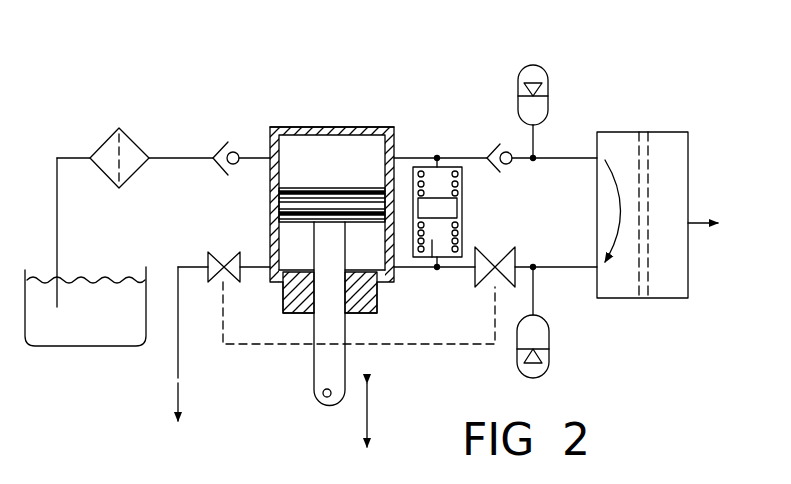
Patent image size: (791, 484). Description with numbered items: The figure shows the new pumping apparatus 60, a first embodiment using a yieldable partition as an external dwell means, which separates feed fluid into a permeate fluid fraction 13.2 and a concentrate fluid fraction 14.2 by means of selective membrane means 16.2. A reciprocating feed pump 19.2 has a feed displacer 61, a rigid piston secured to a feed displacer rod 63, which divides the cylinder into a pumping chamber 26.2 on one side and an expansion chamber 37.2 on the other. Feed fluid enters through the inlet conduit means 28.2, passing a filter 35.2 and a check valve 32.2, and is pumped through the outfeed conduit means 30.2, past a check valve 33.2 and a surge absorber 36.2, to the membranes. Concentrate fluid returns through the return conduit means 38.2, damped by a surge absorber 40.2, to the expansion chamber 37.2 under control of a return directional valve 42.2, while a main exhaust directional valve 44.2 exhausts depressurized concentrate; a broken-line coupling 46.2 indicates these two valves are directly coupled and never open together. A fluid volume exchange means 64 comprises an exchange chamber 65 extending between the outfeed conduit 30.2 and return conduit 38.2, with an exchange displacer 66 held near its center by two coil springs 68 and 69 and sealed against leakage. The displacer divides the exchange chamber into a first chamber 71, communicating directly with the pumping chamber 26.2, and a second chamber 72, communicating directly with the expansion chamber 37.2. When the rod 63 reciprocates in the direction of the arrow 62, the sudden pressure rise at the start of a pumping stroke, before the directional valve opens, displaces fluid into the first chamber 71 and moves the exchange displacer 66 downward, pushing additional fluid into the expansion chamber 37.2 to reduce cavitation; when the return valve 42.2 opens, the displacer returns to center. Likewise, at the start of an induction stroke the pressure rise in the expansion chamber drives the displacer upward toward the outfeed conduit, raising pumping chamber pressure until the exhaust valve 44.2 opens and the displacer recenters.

The permeate fluid fraction 13.2 is at (690, 228).
The concentrate fluid fraction 14.2 is at (177, 393).
The selective membrane means 16.2 is at (648, 177).
The feed pump 19.2 is at (453, 166).
The pumping chamber 26.2 is at (315, 199).
The inlet conduit means 28.2 is at (163, 158).
The outfeed conduit means 30.2 is at (521, 160).
The check valve 32.2 is at (213, 149).
The check valve 33.2 is at (496, 148).
The filter 35.2 is at (110, 137).
The surge absorber 36.2 is at (550, 92).
The expansion chamber 37.2 is at (302, 252).
The return conduit means 38.2 is at (524, 268).
The surge absorber 40.2 is at (549, 331).
The return directional valve 42.2 is at (472, 273).
The main exhaust directional valve 44.2 is at (213, 272).
The coupling 46.2 is at (412, 346).
The apparatus 60 is at (342, 75).
The feed displacer 61 is at (300, 188).
The arrow 62 is at (368, 407).
The feed displacer rod 63 is at (328, 323).
The fluid volume exchange means 64 is at (638, 204).
The exchange chamber 65 is at (643, 215).
The exchange displacer 66 is at (442, 208).
The coil spring 68 is at (453, 186).
The coil spring 69 is at (462, 242).
The first chamber 71 is at (440, 177).
The second chamber 72 is at (433, 258).